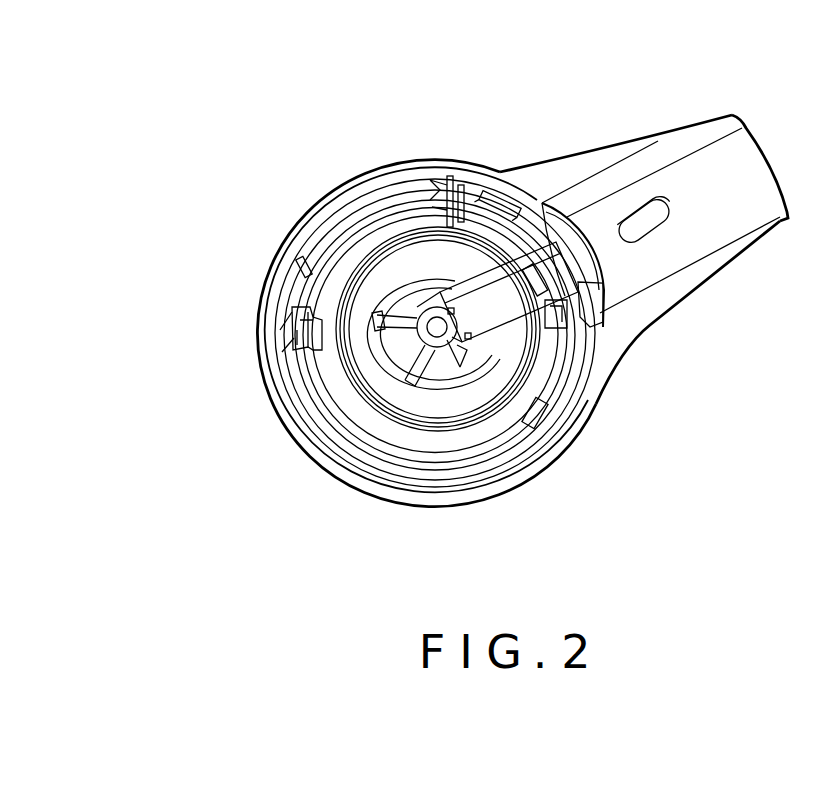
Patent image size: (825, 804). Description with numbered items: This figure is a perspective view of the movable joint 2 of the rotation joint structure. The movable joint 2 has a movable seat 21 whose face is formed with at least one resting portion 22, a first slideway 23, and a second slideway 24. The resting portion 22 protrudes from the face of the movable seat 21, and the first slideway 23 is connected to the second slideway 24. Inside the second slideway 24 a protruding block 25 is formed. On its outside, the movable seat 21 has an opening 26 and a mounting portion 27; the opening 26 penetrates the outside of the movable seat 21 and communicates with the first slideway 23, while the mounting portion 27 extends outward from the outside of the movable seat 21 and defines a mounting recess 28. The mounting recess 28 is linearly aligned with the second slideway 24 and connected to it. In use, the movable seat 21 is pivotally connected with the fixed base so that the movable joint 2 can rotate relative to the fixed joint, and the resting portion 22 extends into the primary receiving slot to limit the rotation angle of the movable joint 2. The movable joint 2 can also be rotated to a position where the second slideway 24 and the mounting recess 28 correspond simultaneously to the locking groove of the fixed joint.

The movable joint 2 is at (150, 202).
The movable seat 21 is at (278, 252).
The resting portion 22 is at (296, 340).
The first slideway 23 is at (470, 195).
The second slideway 24 is at (480, 313).
The protruding block 25 is at (580, 333).
The opening 26 is at (500, 200).
The mounting portion 27 is at (685, 175).
The mounting recess 28 is at (587, 258).